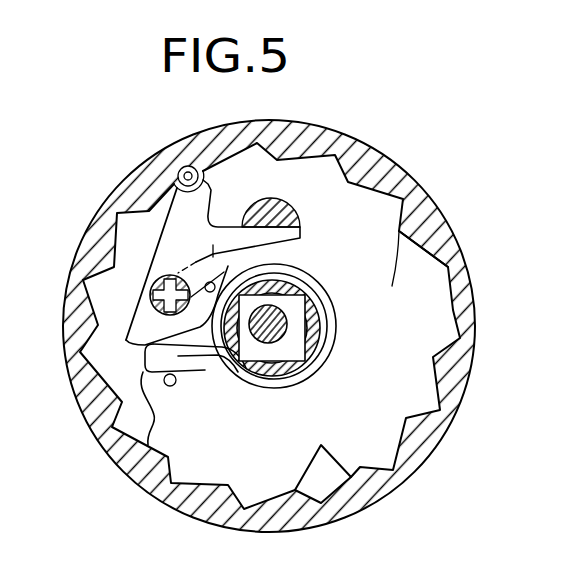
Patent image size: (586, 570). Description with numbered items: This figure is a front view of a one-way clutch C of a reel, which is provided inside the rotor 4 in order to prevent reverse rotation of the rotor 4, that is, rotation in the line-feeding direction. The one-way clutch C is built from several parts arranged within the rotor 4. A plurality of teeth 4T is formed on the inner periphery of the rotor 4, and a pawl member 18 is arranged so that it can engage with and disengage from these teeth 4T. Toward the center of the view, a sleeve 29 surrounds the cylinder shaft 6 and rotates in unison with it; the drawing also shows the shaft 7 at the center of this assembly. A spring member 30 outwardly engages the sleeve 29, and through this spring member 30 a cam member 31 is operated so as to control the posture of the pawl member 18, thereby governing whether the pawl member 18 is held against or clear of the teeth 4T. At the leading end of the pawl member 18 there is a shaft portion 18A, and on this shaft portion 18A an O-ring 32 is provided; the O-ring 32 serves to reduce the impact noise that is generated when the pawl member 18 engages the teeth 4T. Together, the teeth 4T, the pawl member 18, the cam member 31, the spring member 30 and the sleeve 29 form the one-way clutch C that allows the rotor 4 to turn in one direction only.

The rotor 4 is at (453, 312).
The teeth 4T is at (371, 360).
The cylinder shaft 6 is at (278, 293).
The shaft 7 is at (307, 343).
The pawl member 18 is at (190, 209).
The shaft portion 18A is at (188, 166).
The sleeve 29 is at (287, 316).
The spring member 30 is at (208, 362).
The cam member 31 is at (159, 411).
The O-ring 32 is at (172, 191).
The one-way clutch C is at (137, 238).